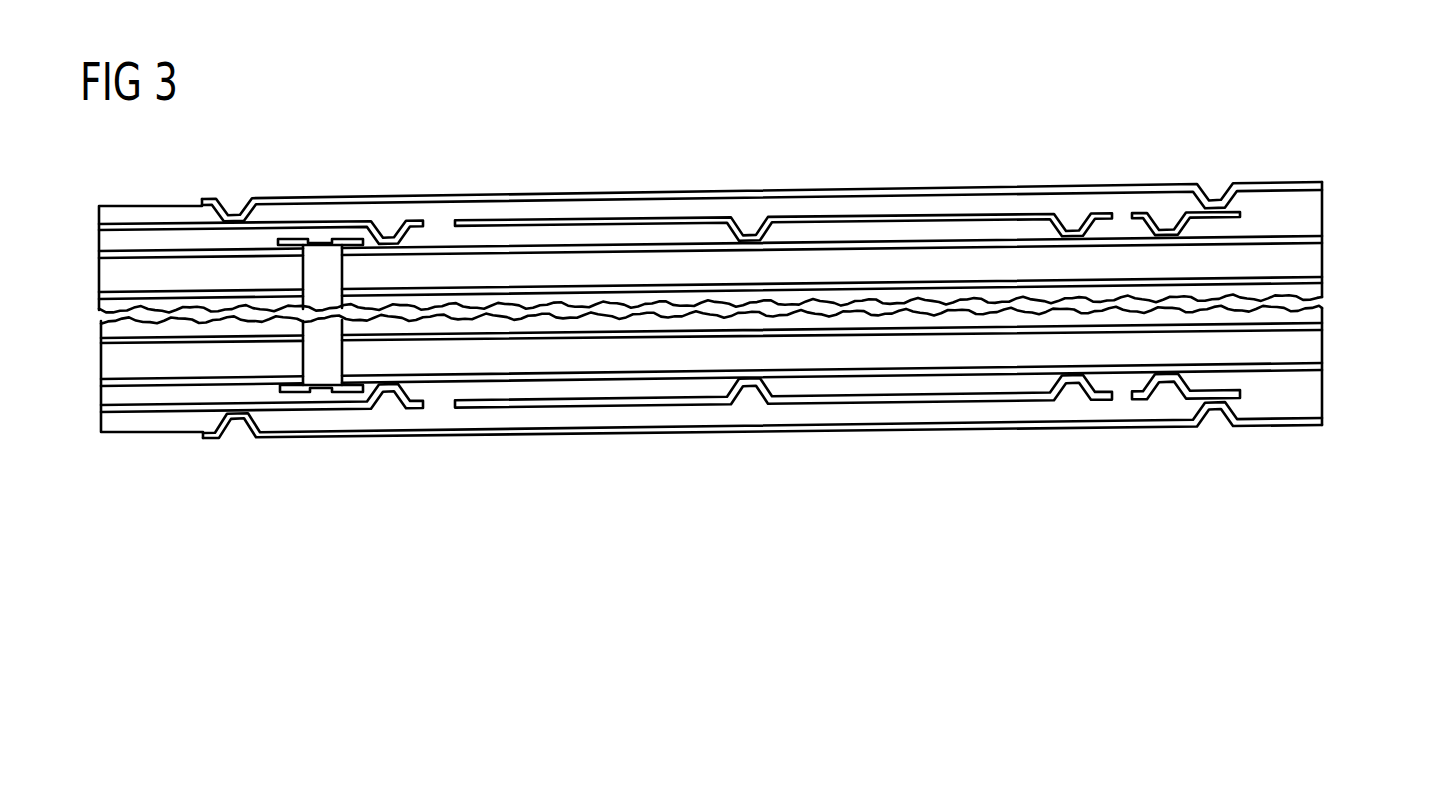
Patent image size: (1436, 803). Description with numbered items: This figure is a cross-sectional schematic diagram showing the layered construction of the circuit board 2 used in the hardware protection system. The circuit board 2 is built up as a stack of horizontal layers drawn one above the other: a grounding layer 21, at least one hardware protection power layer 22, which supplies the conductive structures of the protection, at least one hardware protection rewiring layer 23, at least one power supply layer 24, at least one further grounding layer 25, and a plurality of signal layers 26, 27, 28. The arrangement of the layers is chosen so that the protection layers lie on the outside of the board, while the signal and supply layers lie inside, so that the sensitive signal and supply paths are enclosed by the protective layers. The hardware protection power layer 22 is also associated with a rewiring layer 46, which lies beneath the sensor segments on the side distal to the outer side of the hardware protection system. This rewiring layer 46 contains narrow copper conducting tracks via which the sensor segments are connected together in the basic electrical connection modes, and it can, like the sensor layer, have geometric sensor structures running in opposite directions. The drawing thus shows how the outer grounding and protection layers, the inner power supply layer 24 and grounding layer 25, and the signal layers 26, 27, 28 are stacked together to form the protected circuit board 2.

The circuit board 2 is at (134, 179).
The grounding layer 21 is at (1323, 421).
The hardware protection power layer 22 is at (766, 396).
The rewiring layer 46 is at (1240, 394).
The hardware protection rewiring layer 23 is at (1323, 367).
The power supply layer 24 is at (1323, 326).
The grounding layer 25 is at (1323, 280).
The signal layer 26 is at (1323, 239).
The signal layer 27 is at (1240, 214).
The signal layer 28 is at (1323, 185).